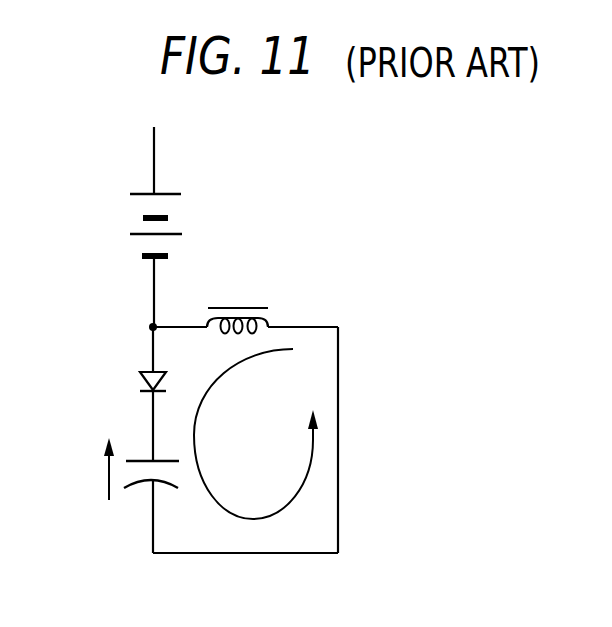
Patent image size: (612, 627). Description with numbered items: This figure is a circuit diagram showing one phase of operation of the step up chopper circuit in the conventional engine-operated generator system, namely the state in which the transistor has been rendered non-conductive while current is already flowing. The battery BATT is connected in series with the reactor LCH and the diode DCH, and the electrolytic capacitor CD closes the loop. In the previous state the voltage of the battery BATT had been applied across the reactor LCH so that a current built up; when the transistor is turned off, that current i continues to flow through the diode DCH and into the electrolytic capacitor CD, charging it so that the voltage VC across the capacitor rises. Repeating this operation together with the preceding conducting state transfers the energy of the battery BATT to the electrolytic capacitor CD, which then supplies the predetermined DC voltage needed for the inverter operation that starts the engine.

The battery BATT is at (121, 227).
The reactor LCH is at (237, 304).
The diode DCH is at (125, 382).
The electrolytic capacitor CD is at (123, 475).
The capacitor voltage VC is at (108, 488).
The charging current i is at (256, 434).